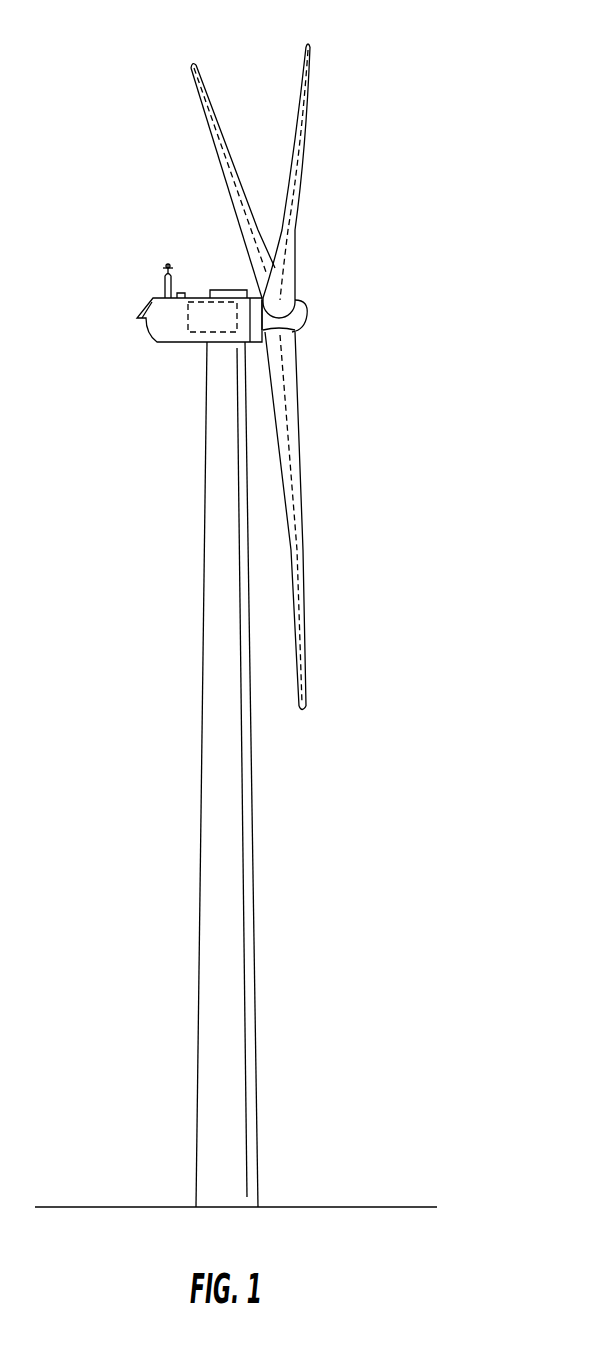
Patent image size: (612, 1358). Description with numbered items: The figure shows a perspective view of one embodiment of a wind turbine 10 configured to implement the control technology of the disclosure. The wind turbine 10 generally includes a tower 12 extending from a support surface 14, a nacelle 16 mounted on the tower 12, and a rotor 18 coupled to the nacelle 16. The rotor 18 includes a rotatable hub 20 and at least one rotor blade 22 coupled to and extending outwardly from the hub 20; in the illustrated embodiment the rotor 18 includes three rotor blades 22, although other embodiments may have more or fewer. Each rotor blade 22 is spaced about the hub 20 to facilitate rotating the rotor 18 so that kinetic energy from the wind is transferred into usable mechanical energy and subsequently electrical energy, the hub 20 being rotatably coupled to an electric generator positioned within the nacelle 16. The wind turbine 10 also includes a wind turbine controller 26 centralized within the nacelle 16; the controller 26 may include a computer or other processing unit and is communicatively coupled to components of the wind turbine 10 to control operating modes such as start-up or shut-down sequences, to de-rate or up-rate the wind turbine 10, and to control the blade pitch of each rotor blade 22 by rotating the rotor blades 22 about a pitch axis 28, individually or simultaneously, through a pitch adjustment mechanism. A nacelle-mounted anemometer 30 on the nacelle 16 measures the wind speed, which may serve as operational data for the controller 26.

The wind turbine 10 is at (437, 168).
The tower 12 is at (248, 978).
The support surface 14 is at (96, 1207).
The nacelle 16 is at (175, 328).
The rotor 18 is at (303, 293).
The rotatable hub 20 is at (305, 322).
The rotor blade 22 is at (218, 130).
The wind turbine controller 26 is at (203, 297).
The pitch axis 28 is at (223, 172).
The nacelle-mounted anemometer 30 is at (165, 270).